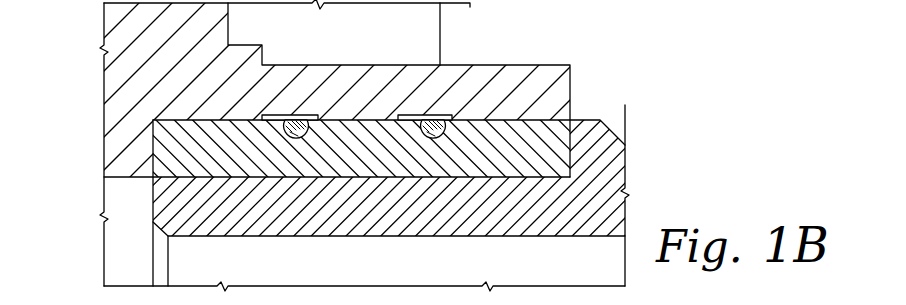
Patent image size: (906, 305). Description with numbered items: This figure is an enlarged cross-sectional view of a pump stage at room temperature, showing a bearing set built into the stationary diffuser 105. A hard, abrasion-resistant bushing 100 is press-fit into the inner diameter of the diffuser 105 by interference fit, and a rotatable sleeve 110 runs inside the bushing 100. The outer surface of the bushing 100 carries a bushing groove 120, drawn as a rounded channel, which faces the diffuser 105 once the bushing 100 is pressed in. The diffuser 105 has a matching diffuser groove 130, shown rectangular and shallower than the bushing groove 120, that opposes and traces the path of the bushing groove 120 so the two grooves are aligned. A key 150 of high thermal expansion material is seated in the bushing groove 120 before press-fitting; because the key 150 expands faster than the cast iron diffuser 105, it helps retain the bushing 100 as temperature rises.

The bushing 100 is at (523, 147).
The diffuser 105 is at (145, 45).
The sleeve 110 is at (602, 130).
The bushing groove 120 is at (304, 128).
The diffuser groove 130 is at (313, 113).
The key 150 is at (293, 132).